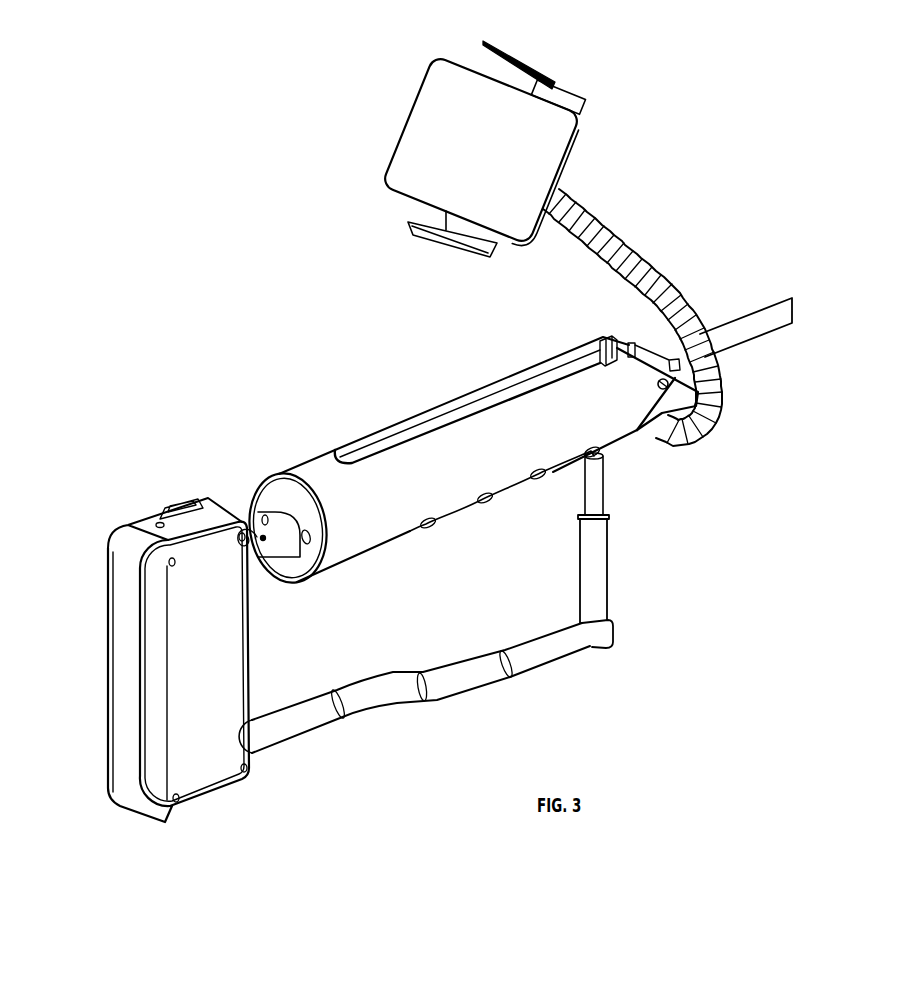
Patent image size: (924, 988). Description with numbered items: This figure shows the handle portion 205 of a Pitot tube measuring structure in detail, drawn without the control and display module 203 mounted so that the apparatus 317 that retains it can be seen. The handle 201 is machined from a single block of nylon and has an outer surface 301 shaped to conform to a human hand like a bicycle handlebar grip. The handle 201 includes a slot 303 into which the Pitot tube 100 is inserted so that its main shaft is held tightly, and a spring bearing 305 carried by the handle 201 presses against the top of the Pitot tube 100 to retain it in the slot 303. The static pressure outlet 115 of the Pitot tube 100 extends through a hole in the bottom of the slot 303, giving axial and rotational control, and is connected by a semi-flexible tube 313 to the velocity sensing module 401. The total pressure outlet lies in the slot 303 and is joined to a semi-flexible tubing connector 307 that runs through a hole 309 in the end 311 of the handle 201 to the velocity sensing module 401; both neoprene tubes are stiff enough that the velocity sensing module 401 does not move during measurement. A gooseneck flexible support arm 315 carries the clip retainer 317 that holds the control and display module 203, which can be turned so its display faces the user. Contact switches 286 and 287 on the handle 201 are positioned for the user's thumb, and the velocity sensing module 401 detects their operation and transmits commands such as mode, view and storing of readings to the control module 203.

The Pitot tube 100 is at (773, 303).
The static pressure outlet 115 is at (583, 477).
The handle 201 is at (501, 438).
The control and display module 203 is at (391, 210).
The handle portion 205 is at (790, 527).
The contact switch 286 is at (636, 341).
The contact switch 287 is at (676, 360).
The outer surface 301 is at (493, 528).
The slot 303 is at (578, 362).
The spring bearing 305 is at (640, 432).
The semi-flexible tubing connector 307 is at (263, 537).
The hole 309 is at (292, 542).
The end 311 is at (307, 483).
The semi-flexible tube 313 is at (582, 648).
The flexible support arm 315 is at (587, 210).
The clip retainer 317 is at (538, 68).
The velocity sensing module 401 is at (205, 710).